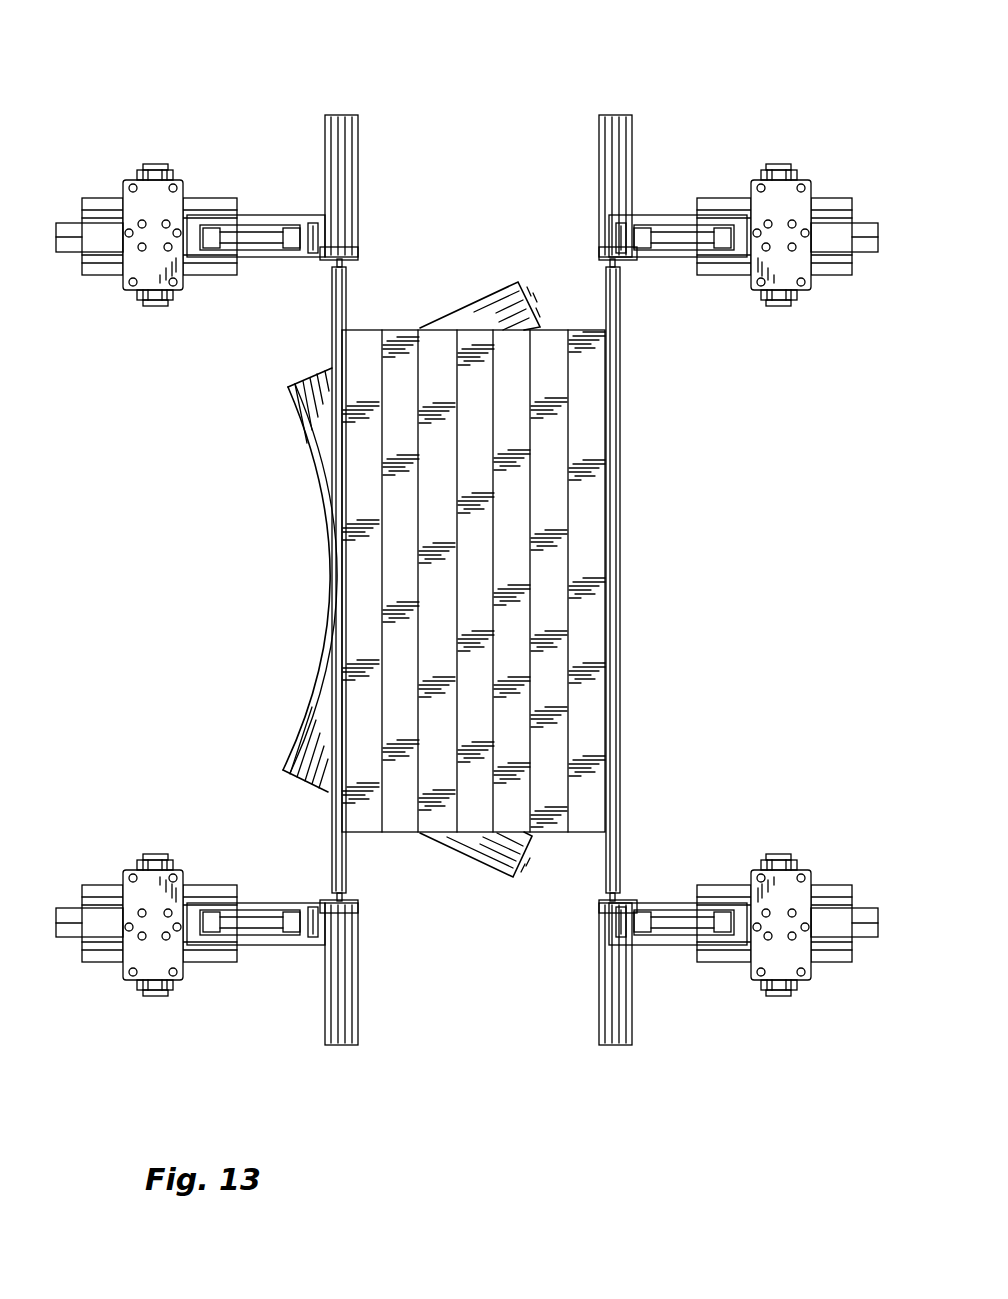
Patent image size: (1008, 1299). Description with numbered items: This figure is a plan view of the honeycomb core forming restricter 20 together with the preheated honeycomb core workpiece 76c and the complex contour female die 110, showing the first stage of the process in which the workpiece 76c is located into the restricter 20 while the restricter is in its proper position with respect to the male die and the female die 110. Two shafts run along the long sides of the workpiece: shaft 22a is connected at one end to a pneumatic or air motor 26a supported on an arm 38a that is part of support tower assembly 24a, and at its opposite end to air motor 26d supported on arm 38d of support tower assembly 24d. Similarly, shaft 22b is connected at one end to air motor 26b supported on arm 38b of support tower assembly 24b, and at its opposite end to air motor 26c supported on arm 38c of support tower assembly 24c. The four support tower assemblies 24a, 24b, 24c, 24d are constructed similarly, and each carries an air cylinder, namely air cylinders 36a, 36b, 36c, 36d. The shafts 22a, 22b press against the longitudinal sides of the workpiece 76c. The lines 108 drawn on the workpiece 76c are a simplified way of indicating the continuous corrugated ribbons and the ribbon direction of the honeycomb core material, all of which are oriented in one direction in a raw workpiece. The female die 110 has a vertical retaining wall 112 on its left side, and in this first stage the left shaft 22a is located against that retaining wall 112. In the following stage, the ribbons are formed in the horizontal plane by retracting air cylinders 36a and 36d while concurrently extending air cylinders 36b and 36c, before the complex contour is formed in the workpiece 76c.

The honeycomb core forming restricter 20 is at (203, 58).
The shaft 22a is at (333, 318).
The shaft 22b is at (620, 312).
The support tower assembly 24a is at (197, 118).
The support tower assembly 24b is at (832, 56).
The support tower assembly 24c is at (776, 835).
The support tower assembly 24d is at (192, 790).
The air motor 26a is at (345, 118).
The air motor 26b is at (613, 162).
The air motor 26c is at (613, 1002).
The air motor 26d is at (333, 1018).
The air cylinder 36a is at (62, 250).
The air cylinder 36b is at (837, 233).
The air cylinder 36c is at (837, 923).
The air cylinder 36d is at (63, 927).
The arm 38a is at (267, 215).
The arm 38b is at (668, 218).
The arm 38c is at (665, 902).
The arm 38d is at (265, 902).
The preheated honeycomb core workpiece 76c is at (562, 740).
The lines indicating ribbons 108 is at (498, 352).
The complex contour female die 110 is at (460, 838).
The vertical retaining wall 112 is at (305, 425).